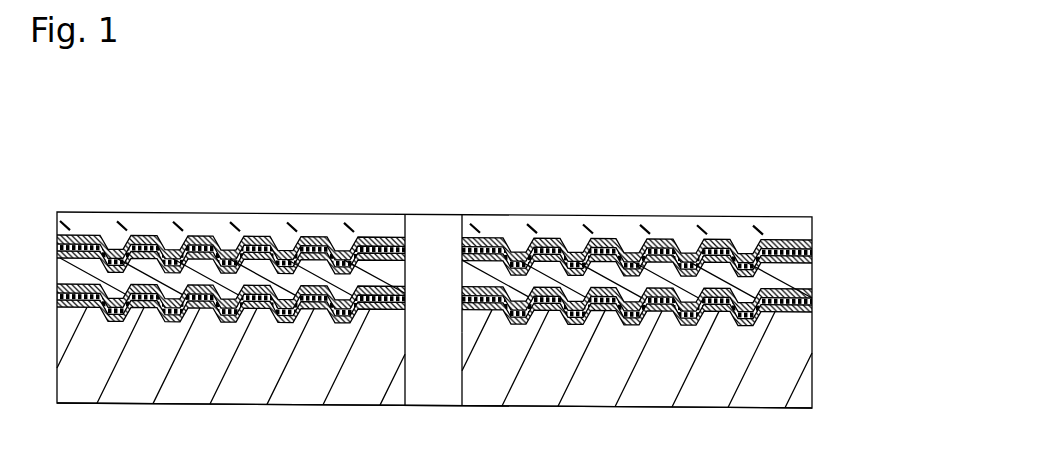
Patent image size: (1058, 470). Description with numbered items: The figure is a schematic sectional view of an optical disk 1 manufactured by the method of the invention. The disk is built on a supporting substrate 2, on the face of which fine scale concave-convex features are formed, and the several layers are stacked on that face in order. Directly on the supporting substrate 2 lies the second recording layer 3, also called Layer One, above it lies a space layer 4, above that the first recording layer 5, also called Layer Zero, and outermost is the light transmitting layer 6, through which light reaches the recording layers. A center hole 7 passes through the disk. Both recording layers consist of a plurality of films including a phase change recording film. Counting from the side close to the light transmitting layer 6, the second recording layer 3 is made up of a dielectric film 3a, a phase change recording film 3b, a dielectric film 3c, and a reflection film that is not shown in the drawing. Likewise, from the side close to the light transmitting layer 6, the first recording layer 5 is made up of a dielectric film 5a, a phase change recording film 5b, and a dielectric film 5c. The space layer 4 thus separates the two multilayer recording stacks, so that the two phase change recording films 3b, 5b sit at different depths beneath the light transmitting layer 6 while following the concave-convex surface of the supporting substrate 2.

The optical disk 1 is at (643, 199).
The supporting substrate 2 is at (806, 393).
The second recording layer 3 is at (490, 326).
The dielectric film 3a is at (814, 292).
The phase change recording film 3b is at (814, 301).
The dielectric film 3c is at (814, 309).
The space layer 4 is at (462, 279).
The first recording layer 5 is at (490, 238).
The dielectric film 5a is at (813, 240).
The phase change recording film 5b is at (813, 251).
The dielectric film 5c is at (813, 261).
The light transmitting layer 6 is at (760, 226).
The center hole 7 is at (462, 380).